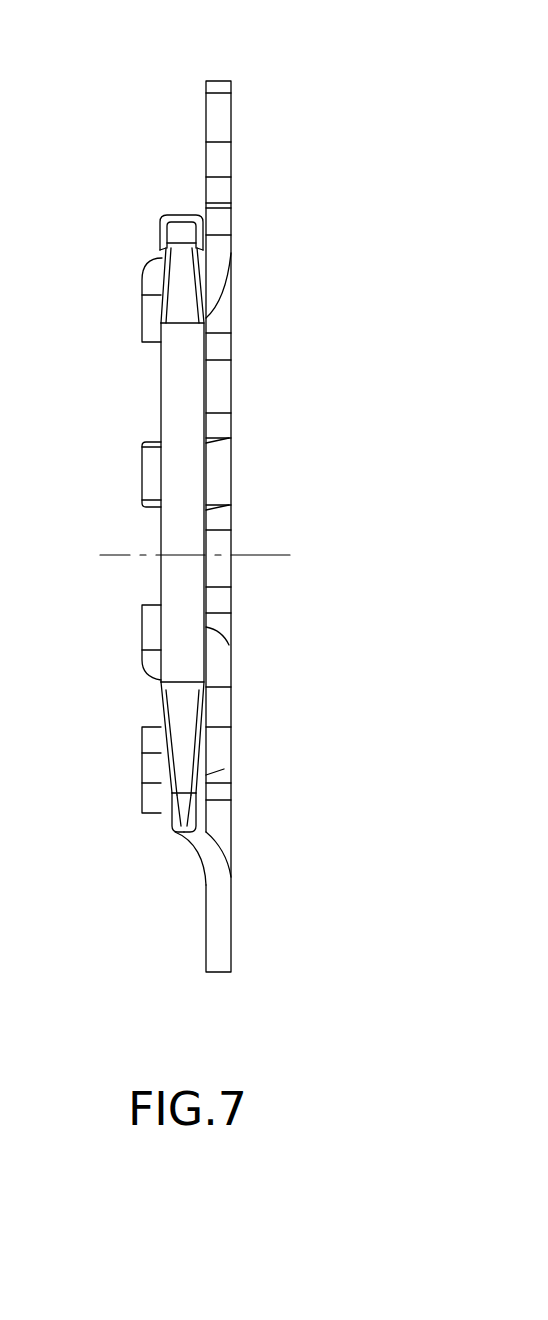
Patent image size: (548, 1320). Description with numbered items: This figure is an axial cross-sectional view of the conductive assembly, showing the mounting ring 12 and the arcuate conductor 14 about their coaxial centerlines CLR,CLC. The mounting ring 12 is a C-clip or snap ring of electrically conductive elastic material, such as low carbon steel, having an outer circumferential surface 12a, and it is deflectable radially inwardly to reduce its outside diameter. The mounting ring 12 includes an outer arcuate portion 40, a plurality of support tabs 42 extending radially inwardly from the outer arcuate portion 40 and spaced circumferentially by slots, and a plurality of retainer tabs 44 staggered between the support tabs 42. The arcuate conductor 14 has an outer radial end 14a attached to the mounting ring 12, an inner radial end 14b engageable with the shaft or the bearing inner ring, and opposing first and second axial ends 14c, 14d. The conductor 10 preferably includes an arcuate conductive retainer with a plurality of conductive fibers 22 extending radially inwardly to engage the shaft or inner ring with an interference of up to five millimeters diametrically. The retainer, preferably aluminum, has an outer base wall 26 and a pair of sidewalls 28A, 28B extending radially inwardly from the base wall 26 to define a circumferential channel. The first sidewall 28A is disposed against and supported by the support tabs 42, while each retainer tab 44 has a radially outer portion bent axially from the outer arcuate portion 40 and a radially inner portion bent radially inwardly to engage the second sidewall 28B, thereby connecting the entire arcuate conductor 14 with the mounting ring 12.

The conductor 10 is at (295, 258).
The mounting ring 12 is at (274, 148).
The outer circumferential surface 12a is at (216, 80).
The arcuate conductor 14 is at (125, 410).
The outer radial end 14a is at (180, 205).
The inner radial end 14b is at (204, 381).
The first axial end 14c is at (220, 231).
The second axial end 14d is at (150, 231).
The conductive fibers 22 is at (170, 358).
The outer base wall 26 is at (182, 848).
The first sidewall 28A is at (205, 810).
The second sidewall 28B is at (172, 818).
The outer arcuate portion 40 is at (220, 108).
The support tabs 42 is at (228, 403).
The retainer tabs 44 is at (132, 279).
The ring centerline and conductor centerline CLR,CLC is at (258, 552).